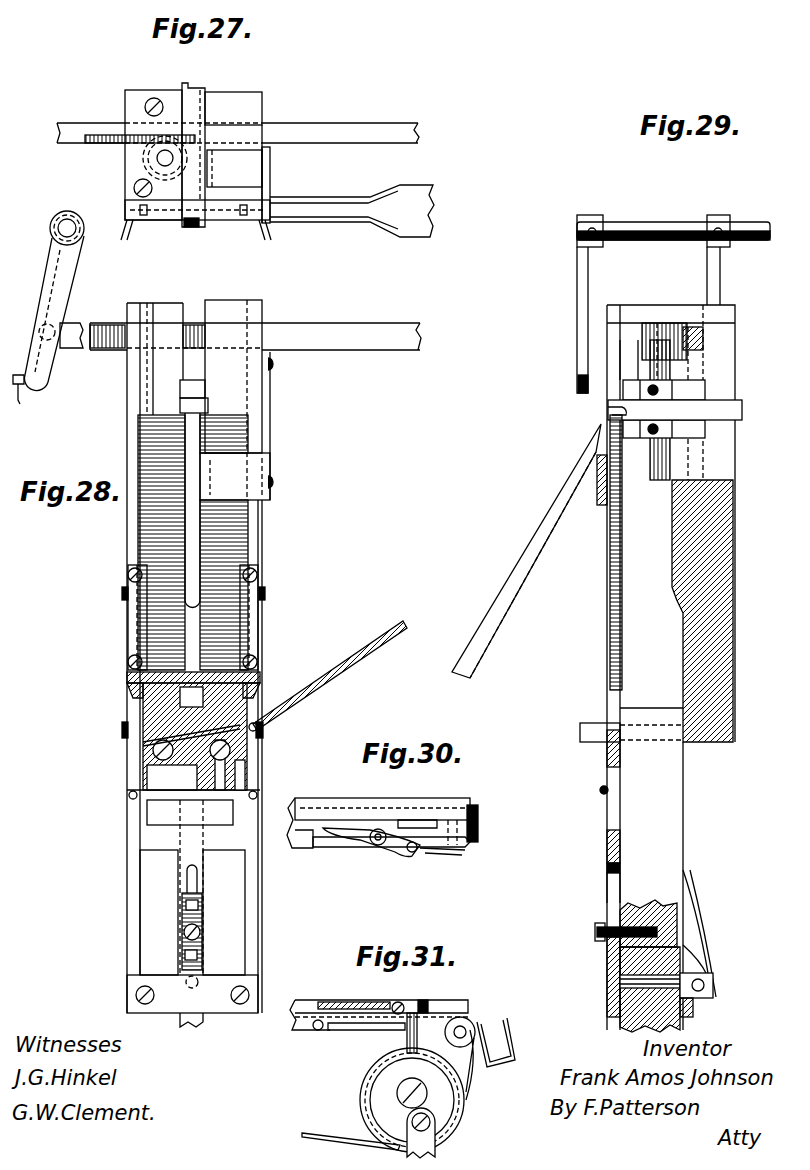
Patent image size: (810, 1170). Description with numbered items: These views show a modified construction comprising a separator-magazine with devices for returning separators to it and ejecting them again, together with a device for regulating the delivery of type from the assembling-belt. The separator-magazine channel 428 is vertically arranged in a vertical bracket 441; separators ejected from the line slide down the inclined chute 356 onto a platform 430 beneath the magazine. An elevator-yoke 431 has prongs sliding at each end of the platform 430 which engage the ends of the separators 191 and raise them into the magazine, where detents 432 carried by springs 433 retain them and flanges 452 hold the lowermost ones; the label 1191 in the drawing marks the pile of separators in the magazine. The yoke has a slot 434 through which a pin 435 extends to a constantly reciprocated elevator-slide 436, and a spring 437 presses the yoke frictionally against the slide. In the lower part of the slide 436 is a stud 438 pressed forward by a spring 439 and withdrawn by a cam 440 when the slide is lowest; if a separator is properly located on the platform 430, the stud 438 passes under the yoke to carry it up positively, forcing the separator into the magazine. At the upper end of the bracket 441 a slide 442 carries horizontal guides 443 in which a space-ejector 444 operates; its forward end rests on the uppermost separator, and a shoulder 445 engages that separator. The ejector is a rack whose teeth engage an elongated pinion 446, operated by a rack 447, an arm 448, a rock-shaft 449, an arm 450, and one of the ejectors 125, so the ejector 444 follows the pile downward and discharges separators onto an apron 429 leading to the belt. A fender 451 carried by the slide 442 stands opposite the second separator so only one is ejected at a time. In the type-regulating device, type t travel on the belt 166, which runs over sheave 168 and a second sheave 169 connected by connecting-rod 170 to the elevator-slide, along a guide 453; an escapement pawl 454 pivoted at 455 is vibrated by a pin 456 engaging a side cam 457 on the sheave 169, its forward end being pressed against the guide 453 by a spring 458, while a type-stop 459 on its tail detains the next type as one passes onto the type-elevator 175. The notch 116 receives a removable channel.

In FIG. 28, the ejector 125 is at (48, 375).
In FIG. 28, the separator 191 is at (167, 733).
In FIG. 28, the inclined chute 356 is at (372, 630).
In FIG. 28, the separator-magazine channel 428 is at (153, 390).
In FIG. 29, the apron 429 is at (503, 587).
In FIG. 28, the platform 430 is at (143, 762).
In FIG. 28, the elevator-yoke 431 is at (241, 778).
In FIG. 29, the elevator-yoke 431 is at (610, 847).
In FIG. 28, the detents 432 is at (130, 690).
In FIG. 28, the springs 433 is at (125, 637).
In FIG. 28, the slot 434 is at (190, 882).
In FIG. 29, the slot 434 is at (615, 888).
In FIG. 28, the pin 435 is at (182, 932).
In FIG. 29, the pin 435 is at (607, 920).
In FIG. 29, the elevator-slide 436 is at (680, 920).
In FIG. 28, the spring 437 is at (203, 953).
In FIG. 29, the spring 437 is at (607, 950).
In FIG. 28, the stud 438 is at (185, 982).
In FIG. 29, the stud 438 is at (607, 988).
In FIG. 29, the spring 439 is at (708, 938).
In FIG. 29, the cam 440 is at (687, 965).
In FIG. 27, the vertical bracket 441 is at (263, 103).
In FIG. 29, the vertical bracket 441 is at (727, 578).
In FIG. 27, the slide 442 is at (247, 167).
In FIG. 28, the horizontal guides 443 is at (195, 389).
In FIG. 29, the horizontal guides 443 is at (627, 390).
In FIG. 27, the space-ejector 444 is at (197, 160).
In FIG. 28, the space-ejector 444 is at (197, 407).
In FIG. 29, the space-ejector 444 is at (673, 408).
In FIG. 29, the shoulder 445 is at (613, 413).
In FIG. 27, the elongated pinion 446 is at (157, 158).
In FIG. 28, the elongated pinion 446 is at (236, 656).
In FIG. 29, the elongated pinion 446 is at (693, 458).
In FIG. 27, the rack 447 is at (373, 130).
In FIG. 28, the rack 447 is at (325, 331).
In FIG. 29, the rack 447 is at (703, 345).
In FIG. 29, the arm 448 is at (713, 276).
In FIG. 28, the rock-shaft 449 is at (72, 233).
In FIG. 29, the rock-shaft 449 is at (647, 214).
In FIG. 28, the arm 450 is at (57, 293).
In FIG. 29, the arm 450 is at (578, 273).
In FIG. 27, the fender 451 is at (195, 225).
In FIG. 28, the fender 451 is at (187, 473).
In FIG. 29, the fender 451 is at (600, 441).
In FIG. 28, the flanges 452 is at (133, 607).
In FIG. 30, the guide 453 is at (386, 801).
In FIG. 31, the guide 453 is at (428, 1002).
In FIG. 30, the escapement device 454 is at (402, 858).
In FIG. 30, the pivot 455 is at (377, 845).
In FIG. 31, the pin 456 is at (405, 1031).
In FIG. 31, the side cam 457 is at (360, 1100).
In FIG. 31, the spring 458 is at (353, 1025).
In FIG. 30, the type-stop 459 is at (332, 858).
In FIG. 31, the type-stop 459 is at (340, 1002).
In FIG. 28, the spring 1191 is at (153, 430).
In FIG. 30, the notch 116 is at (478, 826).
In FIG. 30, the assembling-belt 166 is at (293, 845).
In FIG. 31, the assembling-belt 166 is at (295, 1023).
In FIG. 31, the sheave 168 is at (466, 1027).
In FIG. 30, the sheave 169 is at (433, 847).
In FIG. 31, the sheave 169 is at (445, 1092).
In FIG. 31, the connecting-rod 170 is at (440, 1145).
In FIG. 31, the type-elevator 175 is at (515, 1052).
In FIG. 30, the type t is at (423, 826).